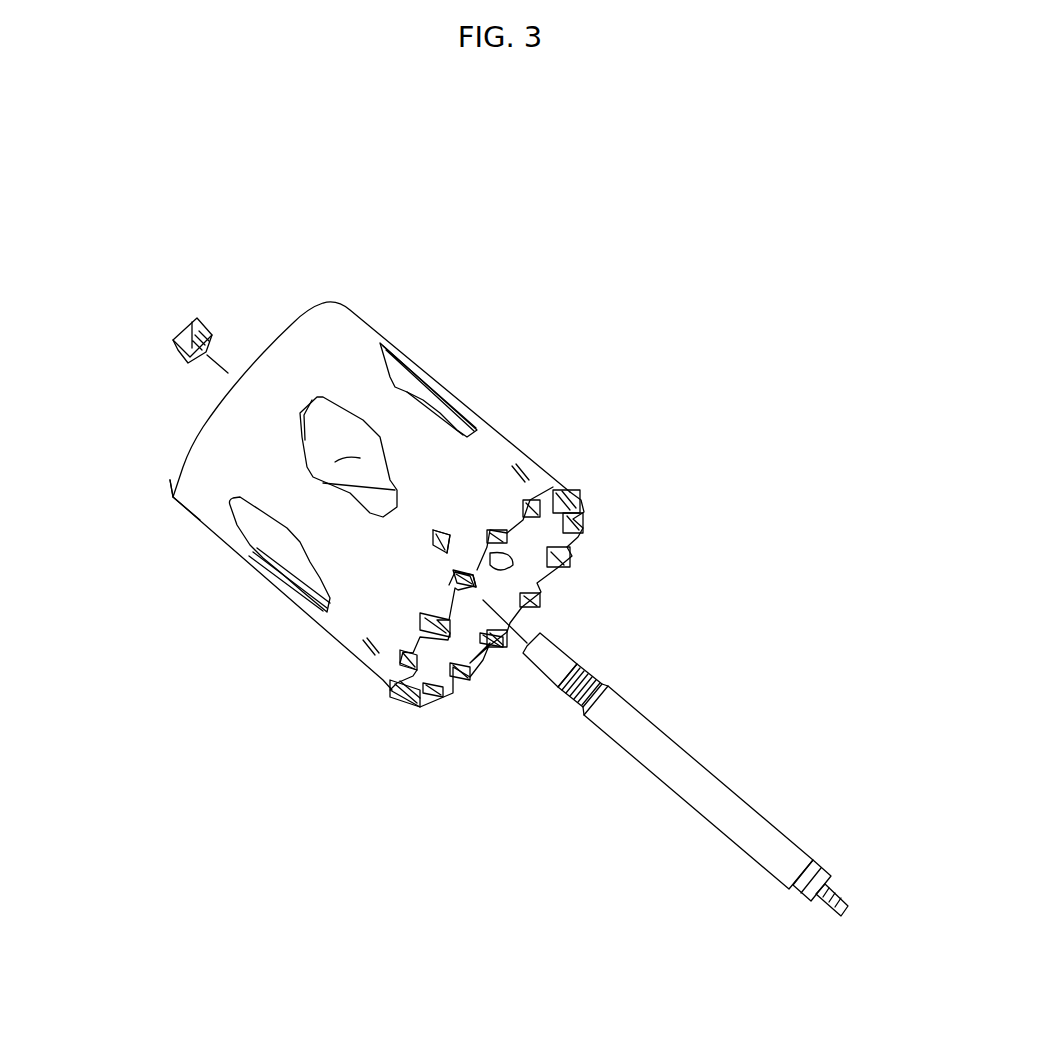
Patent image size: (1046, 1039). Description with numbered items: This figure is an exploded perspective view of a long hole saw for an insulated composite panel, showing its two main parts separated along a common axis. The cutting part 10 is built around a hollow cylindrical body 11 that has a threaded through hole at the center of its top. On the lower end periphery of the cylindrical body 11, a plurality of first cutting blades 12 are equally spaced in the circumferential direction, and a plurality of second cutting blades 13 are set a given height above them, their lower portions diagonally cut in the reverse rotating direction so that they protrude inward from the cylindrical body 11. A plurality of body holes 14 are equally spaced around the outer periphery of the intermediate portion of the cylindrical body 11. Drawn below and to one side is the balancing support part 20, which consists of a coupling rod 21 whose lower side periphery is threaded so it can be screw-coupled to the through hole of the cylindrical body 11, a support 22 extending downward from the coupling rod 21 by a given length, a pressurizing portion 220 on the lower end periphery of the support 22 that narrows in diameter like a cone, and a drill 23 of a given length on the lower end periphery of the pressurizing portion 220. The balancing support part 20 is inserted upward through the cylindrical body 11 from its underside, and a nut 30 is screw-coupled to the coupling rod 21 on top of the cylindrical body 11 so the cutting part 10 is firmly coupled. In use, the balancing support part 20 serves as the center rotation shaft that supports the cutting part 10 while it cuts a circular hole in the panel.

The cutting part 10 is at (475, 355).
The cylindrical body 11 is at (207, 500).
The first cutting blades 12 is at (462, 575).
The second cutting blades 13 is at (443, 530).
The body holes 14 is at (353, 462).
The balancing support part 20 is at (723, 712).
The coupling rod 21 is at (555, 660).
The support 22 is at (652, 745).
The pressurizing portion 220 is at (798, 893).
The drill 23 is at (846, 902).
The nut 30 is at (219, 303).